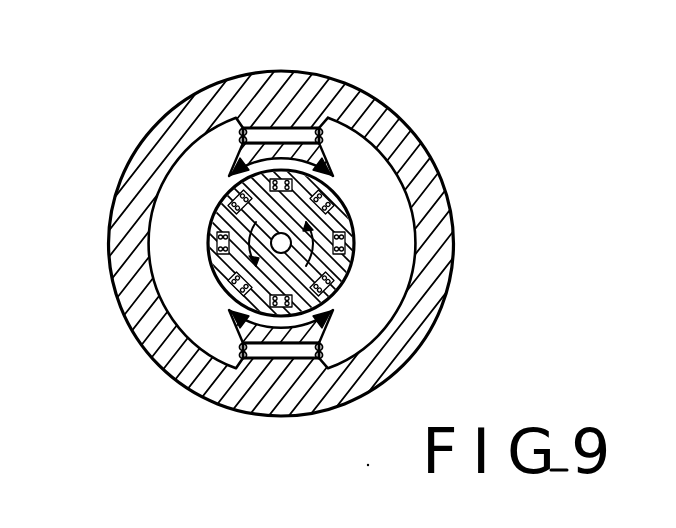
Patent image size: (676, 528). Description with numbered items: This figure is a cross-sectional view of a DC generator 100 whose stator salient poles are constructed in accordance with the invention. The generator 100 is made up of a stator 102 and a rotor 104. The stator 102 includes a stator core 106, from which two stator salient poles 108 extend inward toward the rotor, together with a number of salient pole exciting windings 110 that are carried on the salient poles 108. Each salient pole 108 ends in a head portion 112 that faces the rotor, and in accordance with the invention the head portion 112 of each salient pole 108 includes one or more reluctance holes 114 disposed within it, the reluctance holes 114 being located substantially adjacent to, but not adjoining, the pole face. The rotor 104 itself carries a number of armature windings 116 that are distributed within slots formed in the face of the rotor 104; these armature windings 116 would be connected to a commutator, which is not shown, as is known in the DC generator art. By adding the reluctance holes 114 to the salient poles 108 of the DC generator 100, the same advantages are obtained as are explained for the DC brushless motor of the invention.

The DC generator 100 is at (602, 248).
The stator 102 is at (98, 256).
The rotor 104 is at (200, 276).
The stator core 106 is at (408, 140).
The stator salient poles 108 is at (283, 128).
The salient pole exciting windings 110 is at (330, 339).
The head portion 112 is at (238, 170).
The reluctance holes 114 is at (316, 158).
The armature windings 116 is at (343, 212).